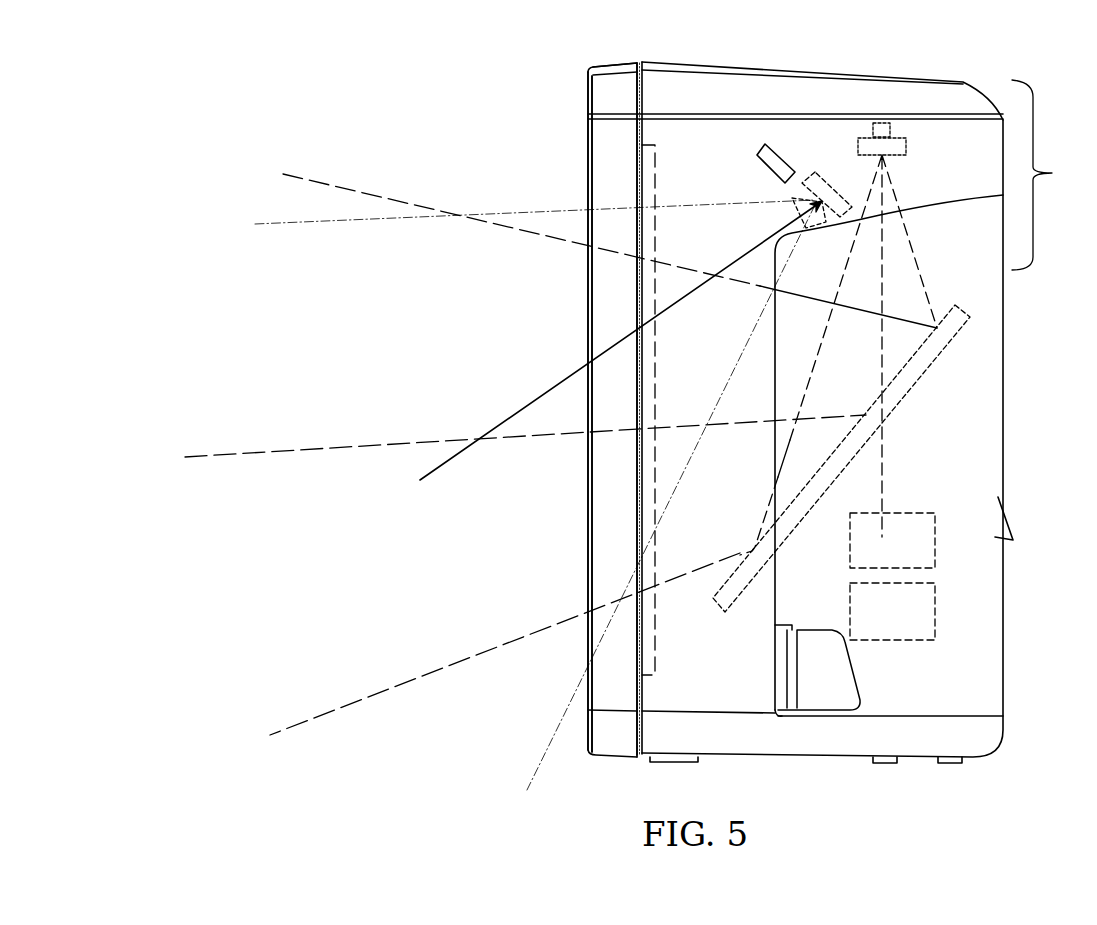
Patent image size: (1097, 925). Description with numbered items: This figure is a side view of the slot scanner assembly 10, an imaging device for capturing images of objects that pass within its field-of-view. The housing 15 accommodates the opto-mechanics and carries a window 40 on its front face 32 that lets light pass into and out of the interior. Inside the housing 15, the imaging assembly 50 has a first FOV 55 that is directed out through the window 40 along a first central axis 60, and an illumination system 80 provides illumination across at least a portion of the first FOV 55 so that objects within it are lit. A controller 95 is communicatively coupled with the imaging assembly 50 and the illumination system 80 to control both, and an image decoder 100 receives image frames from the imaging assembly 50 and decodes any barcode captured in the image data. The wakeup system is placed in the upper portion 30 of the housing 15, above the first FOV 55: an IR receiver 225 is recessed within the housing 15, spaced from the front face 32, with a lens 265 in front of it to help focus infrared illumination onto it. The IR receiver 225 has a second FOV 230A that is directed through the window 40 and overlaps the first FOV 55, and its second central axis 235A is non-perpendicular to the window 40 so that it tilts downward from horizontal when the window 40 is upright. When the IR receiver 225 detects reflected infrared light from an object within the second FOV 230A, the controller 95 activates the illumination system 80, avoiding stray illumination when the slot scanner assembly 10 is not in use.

The slot scanner assembly 10 is at (938, 54).
The housing 15 is at (695, 63).
The upper portion 30 is at (1051, 175).
The front face 32 is at (587, 93).
The window 40 is at (650, 168).
The imaging assembly 50 is at (872, 120).
The first FOV 55 is at (298, 175).
The first central axis 60 is at (286, 448).
The illumination system 80 is at (763, 150).
The controller 95 is at (925, 512).
The image decoder 100 is at (897, 643).
The IR receiver 225 is at (814, 165).
The second FOV 230A is at (280, 225).
The second central axis 235A is at (527, 405).
The lens 265 is at (793, 197).